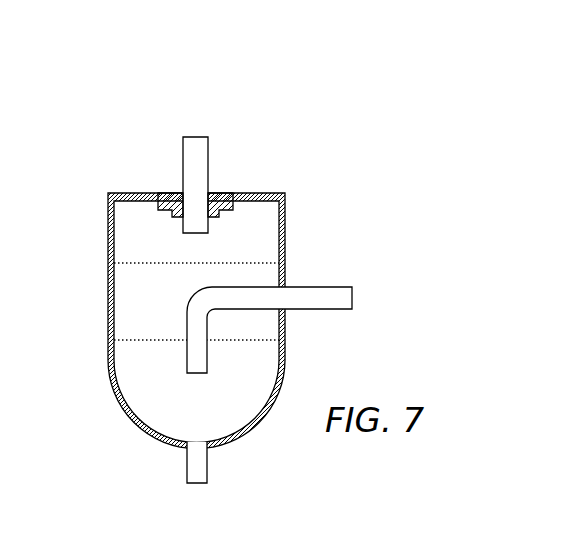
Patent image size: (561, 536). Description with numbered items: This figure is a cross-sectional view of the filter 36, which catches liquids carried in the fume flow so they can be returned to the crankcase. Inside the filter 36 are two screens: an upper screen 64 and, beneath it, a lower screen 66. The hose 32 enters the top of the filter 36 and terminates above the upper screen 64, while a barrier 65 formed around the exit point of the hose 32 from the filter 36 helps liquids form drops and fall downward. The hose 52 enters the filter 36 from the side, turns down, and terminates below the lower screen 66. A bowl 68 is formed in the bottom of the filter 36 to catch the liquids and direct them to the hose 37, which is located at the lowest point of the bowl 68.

The filter 36 is at (226, 262).
The hose 32 is at (203, 167).
The barrier 65 is at (173, 197).
The upper screen 64 is at (131, 262).
The lower screen 66 is at (140, 339).
The hose 52 is at (315, 297).
The bowl 68 is at (183, 411).
The hose 37 is at (200, 473).